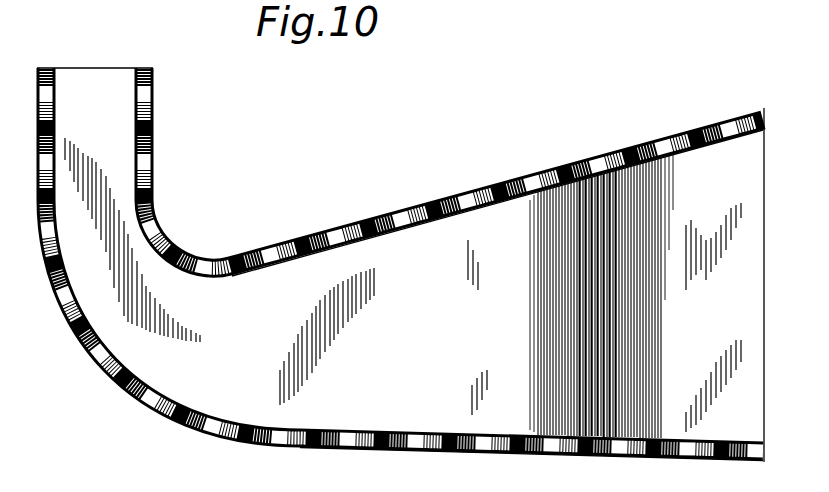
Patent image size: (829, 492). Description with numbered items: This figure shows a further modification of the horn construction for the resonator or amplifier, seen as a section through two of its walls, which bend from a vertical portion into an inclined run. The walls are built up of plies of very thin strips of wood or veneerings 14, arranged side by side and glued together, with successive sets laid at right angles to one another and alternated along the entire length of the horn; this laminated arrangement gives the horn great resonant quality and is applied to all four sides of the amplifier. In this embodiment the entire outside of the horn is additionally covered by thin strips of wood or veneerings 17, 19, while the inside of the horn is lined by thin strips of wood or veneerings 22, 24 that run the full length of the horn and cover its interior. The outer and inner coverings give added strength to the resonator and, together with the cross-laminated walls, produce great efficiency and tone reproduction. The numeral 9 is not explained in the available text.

The casing wall 9 is at (400, 265).
The plies of very thin strips of wood or veneerings 14 is at (512, 186).
The thin strips of wood or veneerings 17 is at (429, 199).
The thin strips of wood or veneerings 19 is at (497, 455).
The thin strips of wood or veneerings 22 is at (398, 431).
The thin strips of wood or veneerings 24 is at (443, 222).